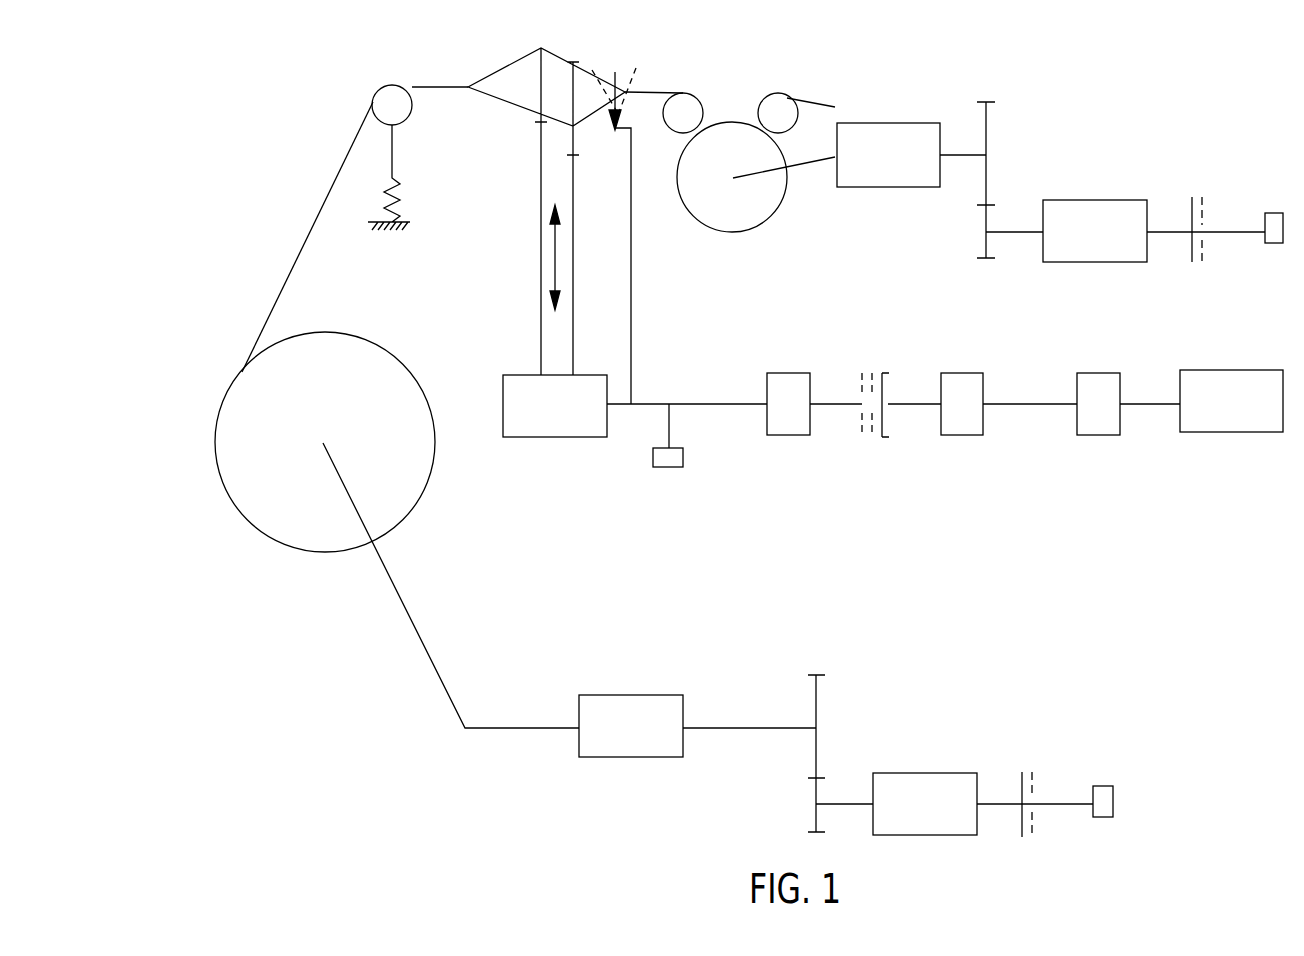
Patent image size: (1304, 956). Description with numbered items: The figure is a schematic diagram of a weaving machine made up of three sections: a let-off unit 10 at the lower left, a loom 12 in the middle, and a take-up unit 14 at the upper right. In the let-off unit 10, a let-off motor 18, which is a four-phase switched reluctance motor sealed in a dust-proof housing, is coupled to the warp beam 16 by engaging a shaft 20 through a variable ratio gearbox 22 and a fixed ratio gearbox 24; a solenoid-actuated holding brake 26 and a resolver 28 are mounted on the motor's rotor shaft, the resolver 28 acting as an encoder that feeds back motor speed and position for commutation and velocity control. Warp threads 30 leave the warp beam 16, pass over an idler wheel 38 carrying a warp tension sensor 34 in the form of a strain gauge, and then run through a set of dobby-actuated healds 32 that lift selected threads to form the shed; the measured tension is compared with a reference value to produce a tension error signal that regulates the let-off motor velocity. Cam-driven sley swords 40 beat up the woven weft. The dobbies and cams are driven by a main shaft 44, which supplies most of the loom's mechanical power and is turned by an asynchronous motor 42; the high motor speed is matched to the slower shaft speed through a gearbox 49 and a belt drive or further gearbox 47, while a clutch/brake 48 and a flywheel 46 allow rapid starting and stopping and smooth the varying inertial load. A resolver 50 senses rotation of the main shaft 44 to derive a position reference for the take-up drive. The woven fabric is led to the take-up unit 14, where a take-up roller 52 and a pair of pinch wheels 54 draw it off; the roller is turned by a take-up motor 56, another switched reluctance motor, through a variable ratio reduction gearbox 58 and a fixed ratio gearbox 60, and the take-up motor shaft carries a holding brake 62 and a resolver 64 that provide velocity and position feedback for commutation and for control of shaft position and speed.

The let-off unit 10 is at (362, 669).
The loom 12 is at (597, 474).
The take-up unit 14 is at (1010, 75).
The warp beam 16 is at (310, 533).
The let-off motor 18 is at (923, 773).
The shaft 20 is at (498, 728).
The variable ratio gearbox 22 is at (818, 698).
The fixed ratio gearbox 24 is at (625, 695).
The holding brake 26 is at (1025, 772).
The resolver 28 is at (1100, 786).
The warp threads 30 is at (440, 88).
The healds 32 is at (541, 48).
The warp tension sensor 34 is at (400, 200).
The idler wheel 38 is at (375, 101).
The sley swords 40 is at (615, 70).
The asynchronous motor 42 is at (1235, 432).
The main shaft 44 is at (650, 404).
The flywheel 46 is at (963, 435).
The belt drive or further gearbox 47 is at (1098, 435).
The clutch/brake 48 is at (862, 437).
The gearbox 49 is at (790, 373).
The resolver 50 is at (668, 468).
The take-up roller 52 is at (762, 205).
The pinch wheels 54 is at (686, 108).
The take-up motor 56 is at (1140, 262).
The variable ratio reduction gearbox 58 is at (988, 118).
The fixed ratio gearbox 60 is at (905, 123).
The holding brake 62 is at (1195, 197).
The resolver 64 is at (1272, 245).